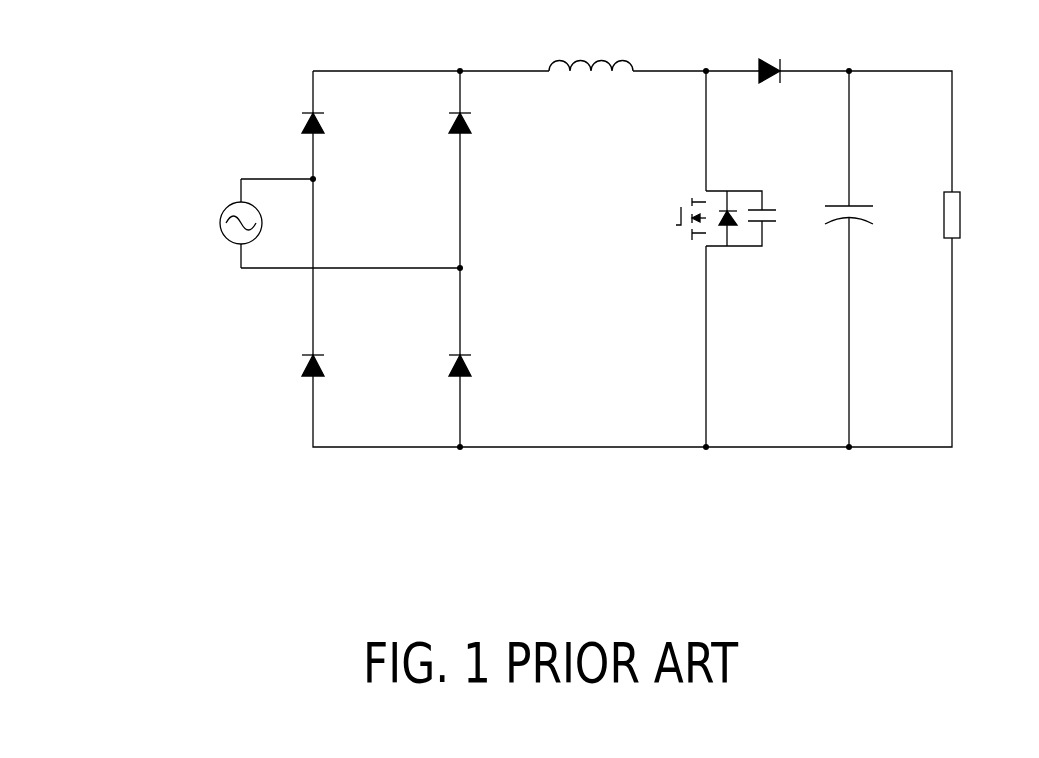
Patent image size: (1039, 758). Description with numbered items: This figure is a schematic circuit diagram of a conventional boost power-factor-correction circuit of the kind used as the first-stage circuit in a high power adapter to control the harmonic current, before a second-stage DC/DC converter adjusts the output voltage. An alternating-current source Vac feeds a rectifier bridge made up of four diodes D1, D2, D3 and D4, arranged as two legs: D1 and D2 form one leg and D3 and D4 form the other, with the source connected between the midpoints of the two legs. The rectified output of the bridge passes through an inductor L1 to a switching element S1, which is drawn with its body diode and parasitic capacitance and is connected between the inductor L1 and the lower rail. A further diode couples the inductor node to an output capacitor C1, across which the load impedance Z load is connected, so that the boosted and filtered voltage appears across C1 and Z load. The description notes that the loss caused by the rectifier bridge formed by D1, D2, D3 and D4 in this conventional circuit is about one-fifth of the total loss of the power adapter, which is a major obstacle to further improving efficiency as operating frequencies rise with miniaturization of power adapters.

The AC voltage source Vac is at (315, 223).
The rectifier diode D1 is at (332, 123).
The rectifier diode D2 is at (333, 366).
The rectifier diode D3 is at (479, 123).
The rectifier diode D4 is at (479, 366).
The boost inductor L1 is at (591, 43).
The switching transistor S1 is at (708, 218).
The output capacitor C1 is at (830, 219).
The load impedance Z load is at (991, 215).